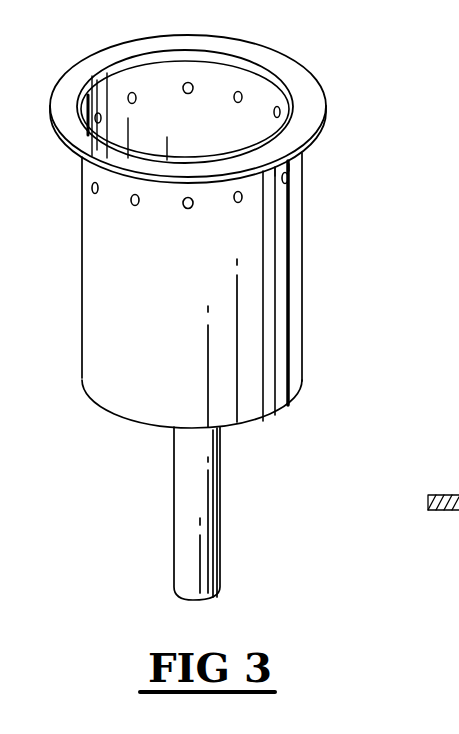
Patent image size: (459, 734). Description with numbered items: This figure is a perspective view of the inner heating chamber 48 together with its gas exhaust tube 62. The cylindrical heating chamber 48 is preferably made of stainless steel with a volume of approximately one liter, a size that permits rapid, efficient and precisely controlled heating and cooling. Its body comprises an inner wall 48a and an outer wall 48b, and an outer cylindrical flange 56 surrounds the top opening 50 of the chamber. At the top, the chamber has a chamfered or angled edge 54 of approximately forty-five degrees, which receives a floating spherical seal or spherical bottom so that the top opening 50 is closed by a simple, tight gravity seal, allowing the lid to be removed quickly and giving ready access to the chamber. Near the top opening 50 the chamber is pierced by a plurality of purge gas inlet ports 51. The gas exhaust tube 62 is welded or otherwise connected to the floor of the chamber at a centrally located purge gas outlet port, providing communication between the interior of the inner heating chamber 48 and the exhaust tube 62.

The inner heating chamber 48 is at (343, 170).
The inner wall 48a is at (229, 133).
The outer wall 48b is at (302, 237).
The top opening 50 is at (287, 78).
The purge gas inlet ports 51 is at (139, 200).
The chamfered or angled edge 54 is at (256, 63).
The outer cylindrical flange 56 is at (326, 100).
The gas exhaust tube 62 is at (220, 473).